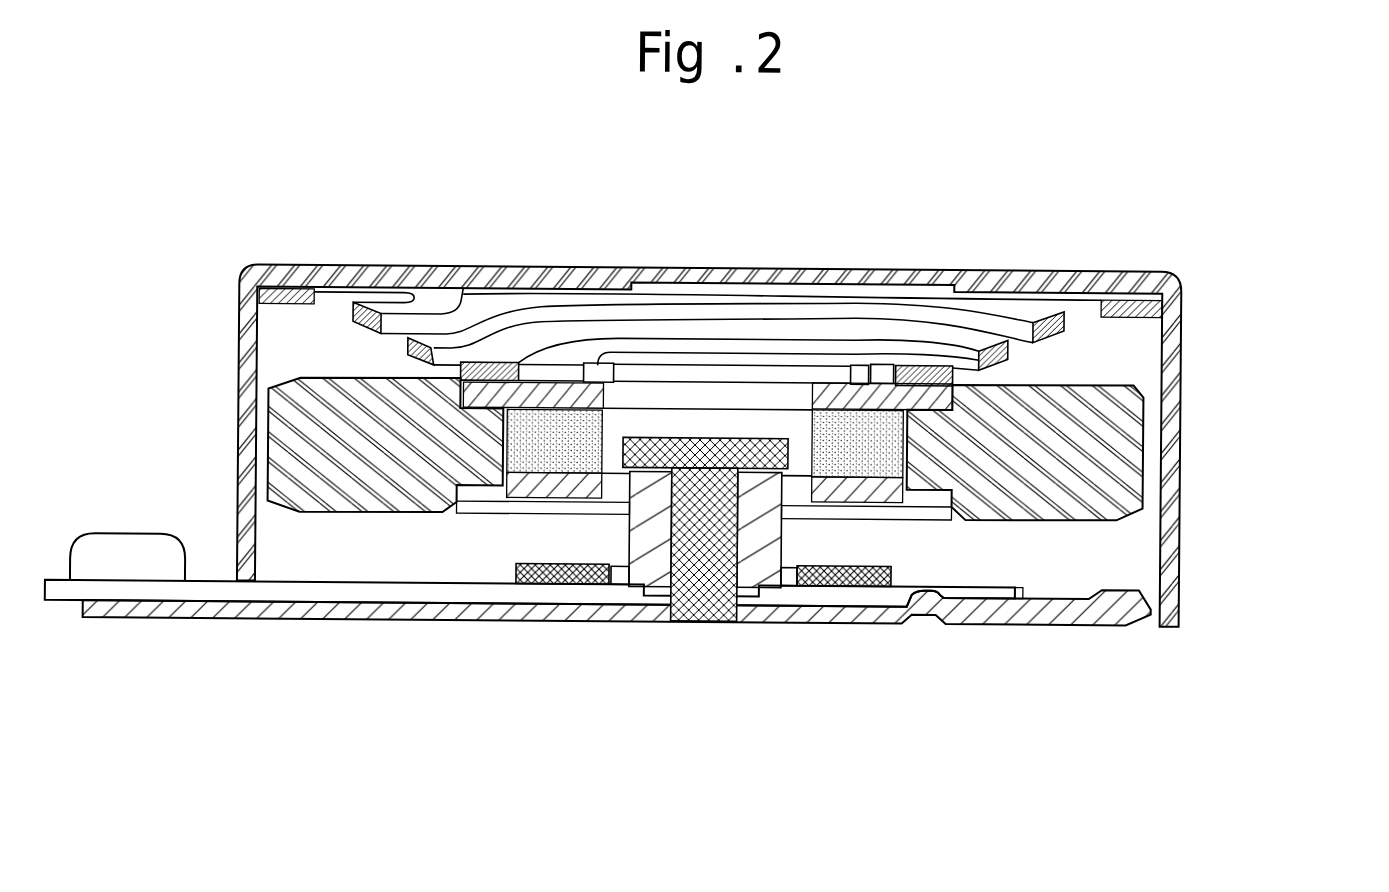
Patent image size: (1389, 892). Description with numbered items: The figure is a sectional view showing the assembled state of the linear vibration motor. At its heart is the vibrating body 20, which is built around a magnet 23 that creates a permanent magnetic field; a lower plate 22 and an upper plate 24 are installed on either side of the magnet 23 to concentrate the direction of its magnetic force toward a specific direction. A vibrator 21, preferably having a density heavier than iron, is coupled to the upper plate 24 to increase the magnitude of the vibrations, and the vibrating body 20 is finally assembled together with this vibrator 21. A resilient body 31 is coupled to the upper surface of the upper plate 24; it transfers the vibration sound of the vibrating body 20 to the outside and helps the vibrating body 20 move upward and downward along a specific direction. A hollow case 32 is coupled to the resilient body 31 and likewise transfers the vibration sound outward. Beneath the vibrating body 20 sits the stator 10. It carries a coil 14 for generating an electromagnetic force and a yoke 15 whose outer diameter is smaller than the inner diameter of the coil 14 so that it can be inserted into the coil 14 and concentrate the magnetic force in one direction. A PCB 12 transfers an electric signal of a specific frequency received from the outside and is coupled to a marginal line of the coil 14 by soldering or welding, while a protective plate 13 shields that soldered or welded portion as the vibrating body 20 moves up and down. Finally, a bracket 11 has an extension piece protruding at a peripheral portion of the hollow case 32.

The stator 10 is at (597, 629).
The bracket 11 is at (327, 611).
The PCB 12 is at (432, 594).
The protective plate 13 is at (587, 585).
The coil 14 is at (642, 556).
The yoke 15 is at (692, 595).
The vibrating body 20 is at (822, 450).
The vibrator 21 is at (1063, 395).
The lower plate 22 is at (960, 516).
The magnet 23 is at (912, 463).
The upper plate 24 is at (878, 444).
The resilient body 31 is at (772, 326).
The hollow case 32 is at (1042, 279).